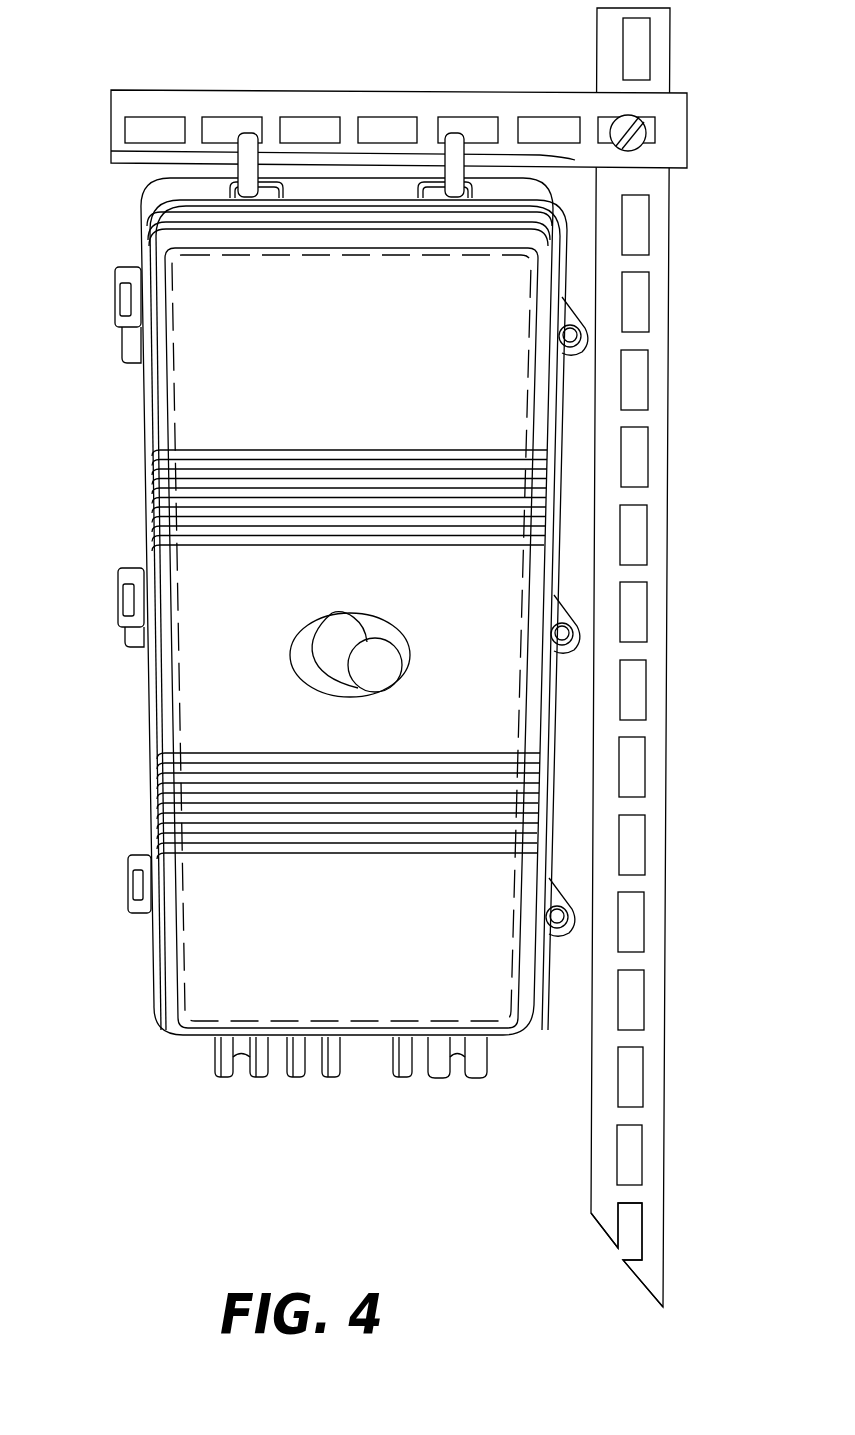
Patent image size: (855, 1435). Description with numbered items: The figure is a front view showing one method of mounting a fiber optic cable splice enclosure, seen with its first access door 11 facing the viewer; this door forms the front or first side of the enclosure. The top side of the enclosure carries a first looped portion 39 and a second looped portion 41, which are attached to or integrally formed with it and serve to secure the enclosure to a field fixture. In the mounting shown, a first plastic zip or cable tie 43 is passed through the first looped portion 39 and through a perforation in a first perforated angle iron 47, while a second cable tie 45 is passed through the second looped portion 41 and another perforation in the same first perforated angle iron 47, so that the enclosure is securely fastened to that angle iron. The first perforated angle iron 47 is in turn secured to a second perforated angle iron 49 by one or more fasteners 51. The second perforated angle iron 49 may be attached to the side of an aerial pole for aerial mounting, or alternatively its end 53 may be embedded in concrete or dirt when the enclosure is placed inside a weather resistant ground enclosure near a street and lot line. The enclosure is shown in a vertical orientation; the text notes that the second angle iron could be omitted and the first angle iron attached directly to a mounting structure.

The first access door 11 is at (358, 421).
The first looped portion 39 is at (433, 184).
The second looped portion 41 is at (280, 182).
The first cable tie 43 is at (452, 133).
The second cable tie 45 is at (243, 133).
The first perforated angle iron 47 is at (123, 107).
The second perforated angle iron 49 is at (643, 412).
The fastener 51 is at (647, 133).
The end of second perforated angle iron 53 is at (650, 1216).